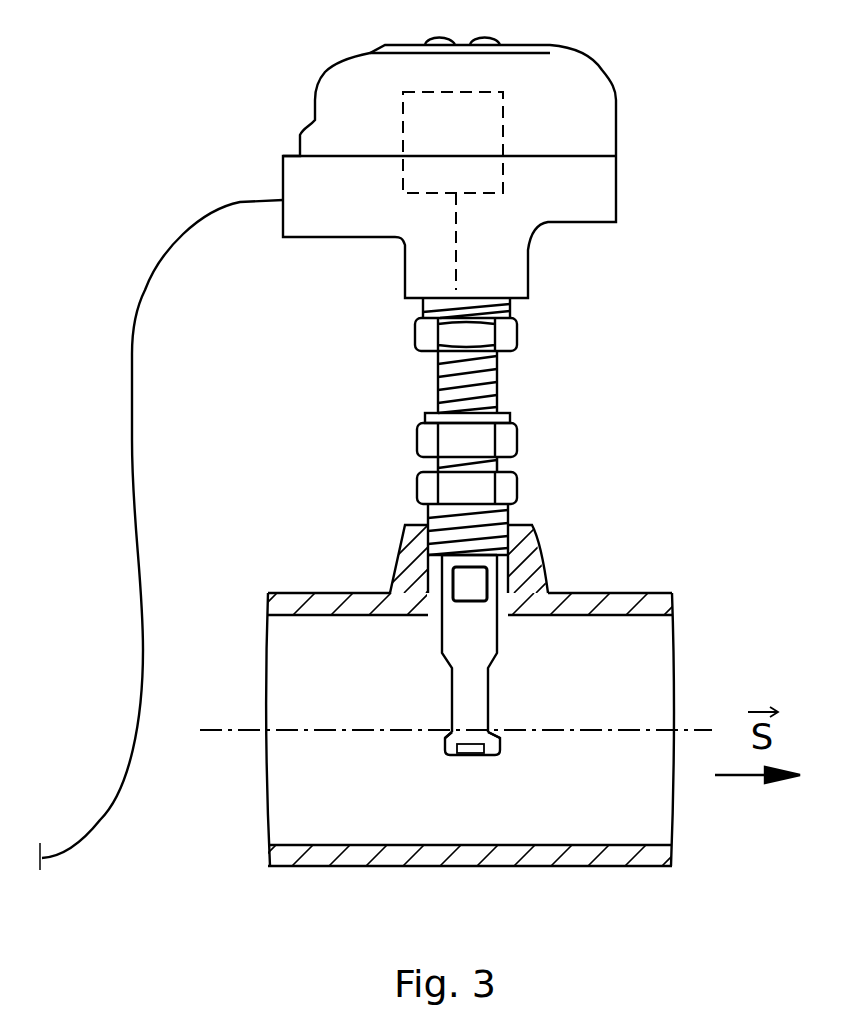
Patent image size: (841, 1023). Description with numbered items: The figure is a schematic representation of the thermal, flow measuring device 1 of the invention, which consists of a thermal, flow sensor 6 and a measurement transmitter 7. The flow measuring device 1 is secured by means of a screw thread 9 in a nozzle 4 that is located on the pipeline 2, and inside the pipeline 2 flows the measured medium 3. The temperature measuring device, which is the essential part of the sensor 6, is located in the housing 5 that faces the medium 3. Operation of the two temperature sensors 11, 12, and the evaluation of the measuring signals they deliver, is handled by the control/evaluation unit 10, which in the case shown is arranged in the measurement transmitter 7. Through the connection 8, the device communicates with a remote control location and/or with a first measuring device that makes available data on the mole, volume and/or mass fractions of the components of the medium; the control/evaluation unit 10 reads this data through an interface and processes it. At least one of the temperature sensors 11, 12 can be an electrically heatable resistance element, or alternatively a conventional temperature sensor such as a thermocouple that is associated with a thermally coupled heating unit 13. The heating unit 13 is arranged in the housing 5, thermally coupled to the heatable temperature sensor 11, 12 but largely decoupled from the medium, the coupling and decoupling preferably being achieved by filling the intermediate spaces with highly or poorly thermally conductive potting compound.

The thermal flow measuring device 1 is at (648, 348).
The pipeline 2 is at (612, 598).
The medium 3 is at (628, 806).
The nozzle 4 is at (510, 523).
The housing 5 is at (440, 637).
The thermal flow sensor 6 is at (470, 757).
The measurement transmitter 7 is at (618, 115).
The connection 8 is at (165, 254).
The screw thread 9 is at (425, 522).
The control/evaluation unit 10 is at (404, 122).
The first temperature sensor 11 is at (450, 729).
The second temperature sensor 12 is at (492, 731).
The heating unit 13 is at (476, 582).